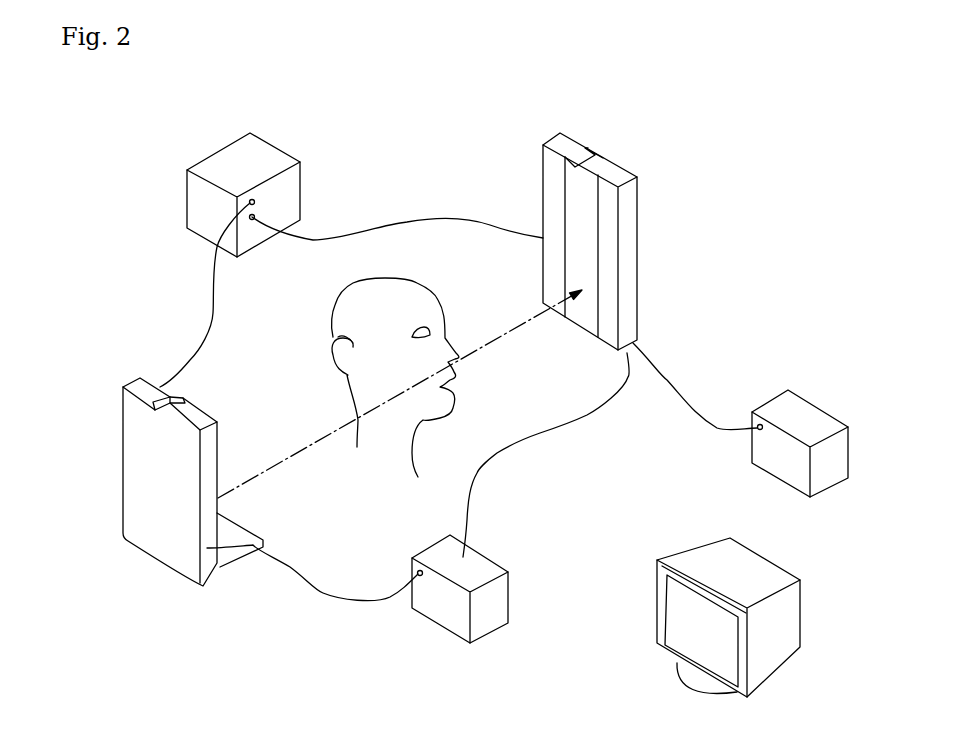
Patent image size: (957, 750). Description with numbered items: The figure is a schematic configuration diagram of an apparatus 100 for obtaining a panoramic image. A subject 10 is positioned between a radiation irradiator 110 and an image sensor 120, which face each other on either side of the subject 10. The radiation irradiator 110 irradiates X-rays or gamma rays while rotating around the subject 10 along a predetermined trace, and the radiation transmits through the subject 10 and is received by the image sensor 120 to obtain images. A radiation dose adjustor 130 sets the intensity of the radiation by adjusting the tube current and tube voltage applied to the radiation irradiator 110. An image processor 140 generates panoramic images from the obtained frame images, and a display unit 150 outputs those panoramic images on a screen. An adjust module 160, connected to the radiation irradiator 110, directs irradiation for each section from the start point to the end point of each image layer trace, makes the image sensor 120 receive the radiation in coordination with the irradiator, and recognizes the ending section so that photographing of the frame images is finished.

The apparatus for obtaining a panoramic image 100 is at (810, 144).
The subject 10 is at (350, 320).
The radiation irradiator 110 is at (147, 468).
The image sensor 120 is at (628, 245).
The radiation dose adjustor 130 is at (807, 410).
The image processor 140 is at (493, 618).
The display unit 150 is at (785, 627).
The adjust module 160 is at (233, 157).